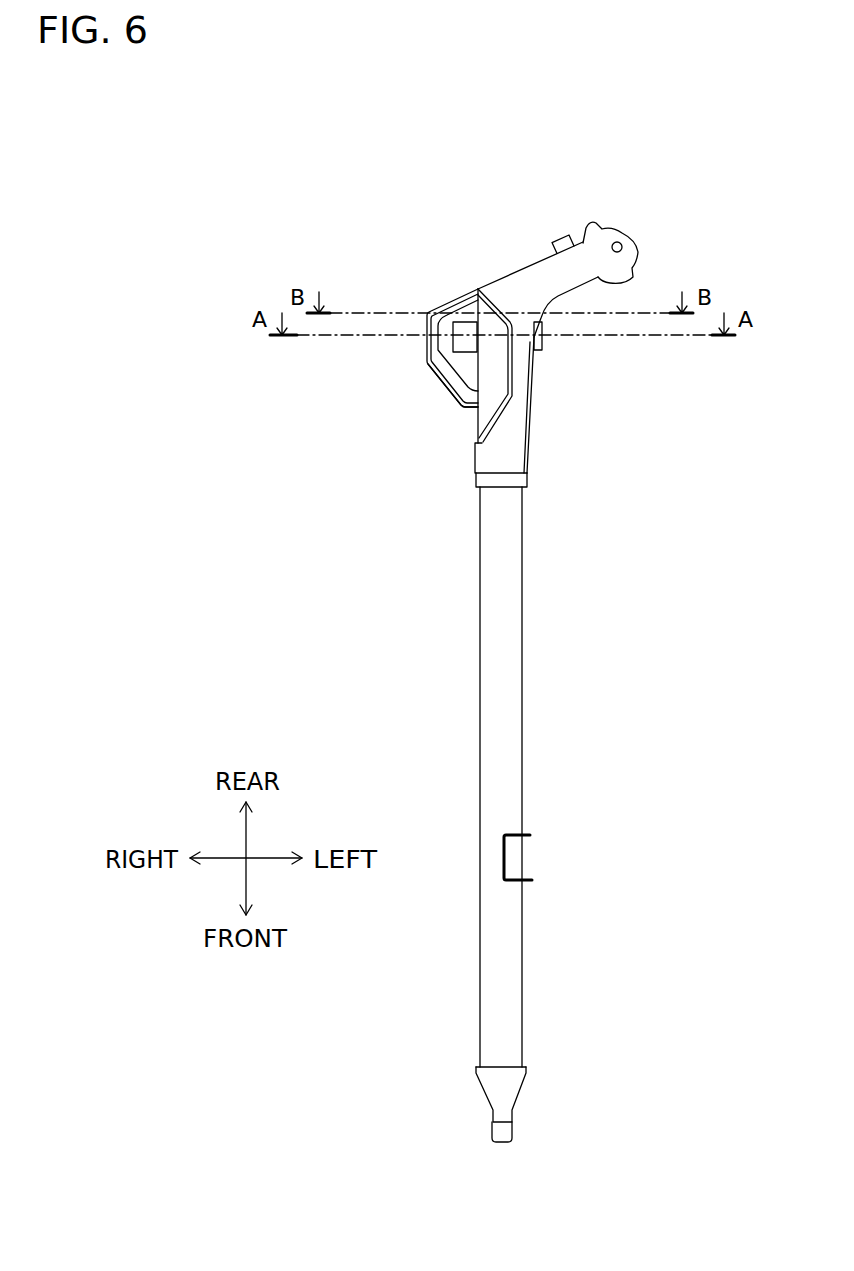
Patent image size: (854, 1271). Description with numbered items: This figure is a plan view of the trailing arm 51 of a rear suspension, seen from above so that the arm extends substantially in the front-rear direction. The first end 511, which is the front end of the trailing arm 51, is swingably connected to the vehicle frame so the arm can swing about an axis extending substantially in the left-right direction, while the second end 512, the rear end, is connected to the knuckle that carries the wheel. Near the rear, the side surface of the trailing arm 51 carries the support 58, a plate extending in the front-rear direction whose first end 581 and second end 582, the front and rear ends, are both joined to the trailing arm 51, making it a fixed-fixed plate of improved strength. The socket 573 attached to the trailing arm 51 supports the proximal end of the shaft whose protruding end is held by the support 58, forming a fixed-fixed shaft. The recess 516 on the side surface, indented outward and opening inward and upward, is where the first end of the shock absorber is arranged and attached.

The trailing arm 51 is at (481, 656).
The first end 511 is at (493, 1108).
The second end 512 is at (589, 226).
The recess 516 is at (508, 392).
The socket 573 is at (545, 351).
The support 58 is at (427, 358).
The first end 581 is at (470, 413).
The second end 582 is at (478, 291).